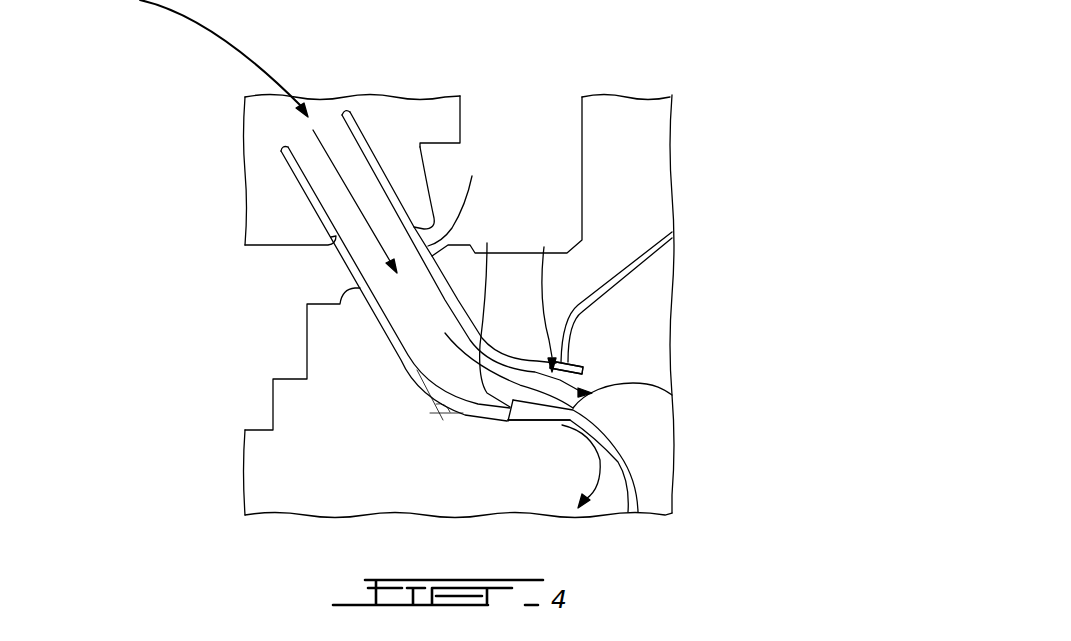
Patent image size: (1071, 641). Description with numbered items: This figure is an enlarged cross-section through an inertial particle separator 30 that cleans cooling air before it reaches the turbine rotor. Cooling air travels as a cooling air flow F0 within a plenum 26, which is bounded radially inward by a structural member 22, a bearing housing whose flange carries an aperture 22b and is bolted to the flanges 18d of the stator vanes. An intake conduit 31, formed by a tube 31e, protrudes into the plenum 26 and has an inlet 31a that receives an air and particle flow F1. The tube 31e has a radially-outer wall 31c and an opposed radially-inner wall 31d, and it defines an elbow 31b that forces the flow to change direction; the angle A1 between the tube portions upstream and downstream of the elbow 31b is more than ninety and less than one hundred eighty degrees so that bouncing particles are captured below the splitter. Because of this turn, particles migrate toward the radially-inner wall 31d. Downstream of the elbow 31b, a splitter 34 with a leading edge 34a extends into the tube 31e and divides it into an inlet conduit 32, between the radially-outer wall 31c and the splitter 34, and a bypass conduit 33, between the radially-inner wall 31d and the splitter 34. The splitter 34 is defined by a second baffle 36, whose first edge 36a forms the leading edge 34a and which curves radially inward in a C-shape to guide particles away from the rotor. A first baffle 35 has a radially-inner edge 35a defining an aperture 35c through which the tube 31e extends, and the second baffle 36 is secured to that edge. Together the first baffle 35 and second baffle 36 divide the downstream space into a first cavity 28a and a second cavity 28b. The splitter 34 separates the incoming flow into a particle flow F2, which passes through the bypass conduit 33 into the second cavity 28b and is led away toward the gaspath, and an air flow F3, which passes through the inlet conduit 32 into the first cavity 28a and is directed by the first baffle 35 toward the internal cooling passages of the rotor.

The flange of stator vane 18d is at (557, 142).
The structural member 22 is at (260, 383).
The aperture 22b is at (469, 195).
The plenum 26 is at (283, 197).
The first cavity 28a is at (667, 428).
The second cavity 28b is at (650, 202).
The inertial particle separator 30 is at (294, 279).
The intake conduit 31 is at (412, 350).
The inlet 31a is at (281, 124).
The elbow 31b is at (440, 400).
The radially-outer wall 31c is at (360, 141).
The radially-inner wall 31d is at (313, 202).
The tube 31e is at (394, 359).
The inlet conduit 32 is at (550, 285).
The bypass conduit 33 is at (544, 432).
The splitter 34 is at (647, 387).
The leading edge 34a is at (492, 308).
The first baffle 35 is at (650, 260).
The radially-inner edge 35a is at (575, 355).
The aperture 35c is at (683, 354).
The second baffle 36 is at (647, 510).
The first edge 36a is at (504, 422).
The cooling air flow F0 is at (152, 0).
The air and particle flow F1 is at (323, 150).
The particle flow F2 is at (603, 462).
The air flow F3 is at (534, 360).
The angle A1 is at (447, 420).